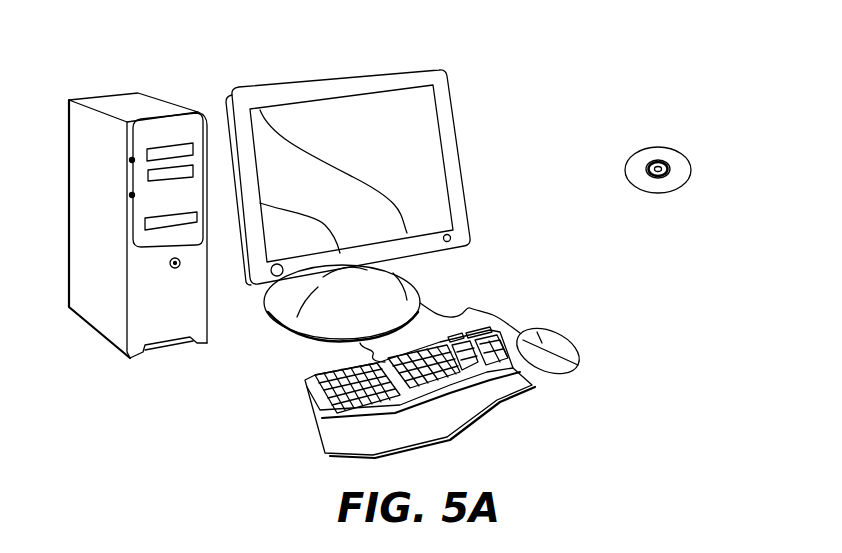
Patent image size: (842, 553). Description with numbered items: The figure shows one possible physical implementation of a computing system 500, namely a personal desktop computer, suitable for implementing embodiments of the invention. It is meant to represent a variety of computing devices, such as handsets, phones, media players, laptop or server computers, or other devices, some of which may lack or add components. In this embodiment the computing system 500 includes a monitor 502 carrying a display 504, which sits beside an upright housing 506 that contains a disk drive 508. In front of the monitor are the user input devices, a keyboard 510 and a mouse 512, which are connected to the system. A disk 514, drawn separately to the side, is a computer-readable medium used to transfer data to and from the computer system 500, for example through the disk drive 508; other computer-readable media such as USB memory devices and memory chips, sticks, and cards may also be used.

The computing system 500 is at (580, 60).
The monitor 502 is at (463, 177).
The display 504 is at (415, 113).
The housing 506 is at (125, 102).
The disk drive 508 is at (185, 220).
The keyboard 510 is at (312, 422).
The mouse 512 is at (570, 342).
The disk 514 is at (675, 147).